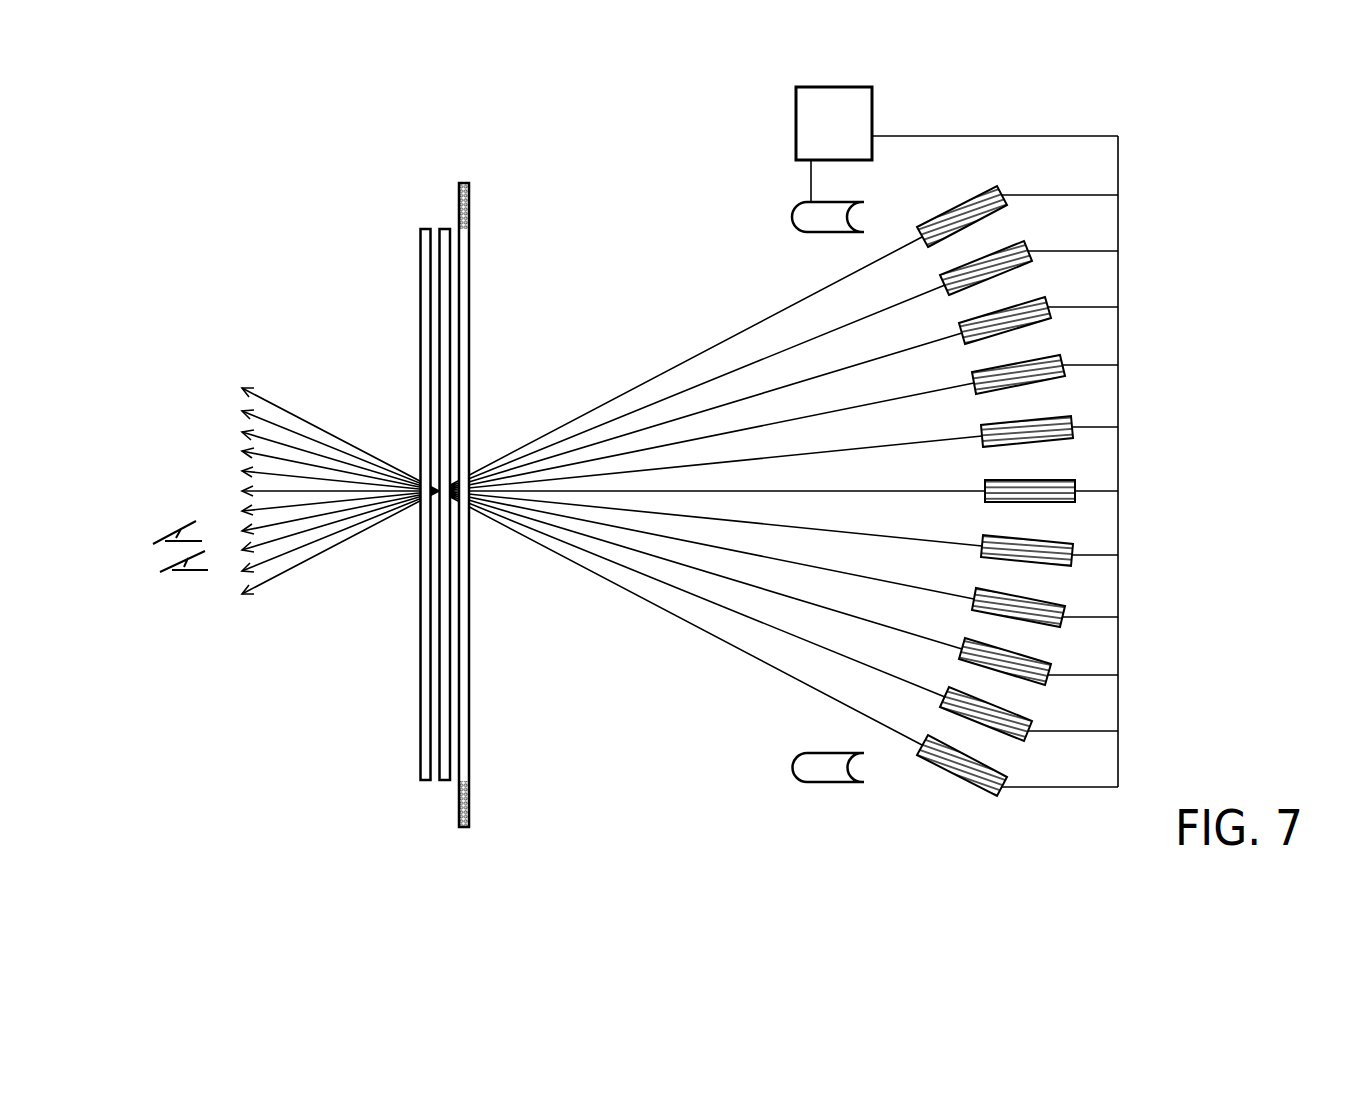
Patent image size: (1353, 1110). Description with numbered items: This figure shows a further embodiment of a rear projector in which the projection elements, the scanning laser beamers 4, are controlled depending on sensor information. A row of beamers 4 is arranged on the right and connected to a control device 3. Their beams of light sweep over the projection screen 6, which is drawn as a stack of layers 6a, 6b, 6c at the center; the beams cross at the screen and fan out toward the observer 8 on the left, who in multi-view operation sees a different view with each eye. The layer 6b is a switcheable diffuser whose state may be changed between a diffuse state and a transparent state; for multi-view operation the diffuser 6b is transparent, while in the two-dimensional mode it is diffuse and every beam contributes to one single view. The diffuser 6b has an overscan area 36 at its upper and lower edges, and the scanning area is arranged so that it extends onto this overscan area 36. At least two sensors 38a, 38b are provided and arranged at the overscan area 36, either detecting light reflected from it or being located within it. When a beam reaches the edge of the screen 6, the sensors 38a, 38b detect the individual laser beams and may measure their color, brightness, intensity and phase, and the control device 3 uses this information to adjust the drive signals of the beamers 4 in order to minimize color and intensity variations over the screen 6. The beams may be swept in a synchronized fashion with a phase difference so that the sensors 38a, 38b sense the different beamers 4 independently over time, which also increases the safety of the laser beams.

The control device 3 is at (796, 110).
The beamers 4 is at (1003, 188).
The projection screen 6 is at (426, 507).
The projection screen layer 6a is at (422, 764).
The switcheable diffuser 6b is at (470, 742).
The projection screen layer 6c is at (443, 782).
The observer 8 is at (168, 524).
The overscan area 36 is at (468, 195).
The sensor 38a is at (793, 222).
The sensor 38b is at (793, 771).